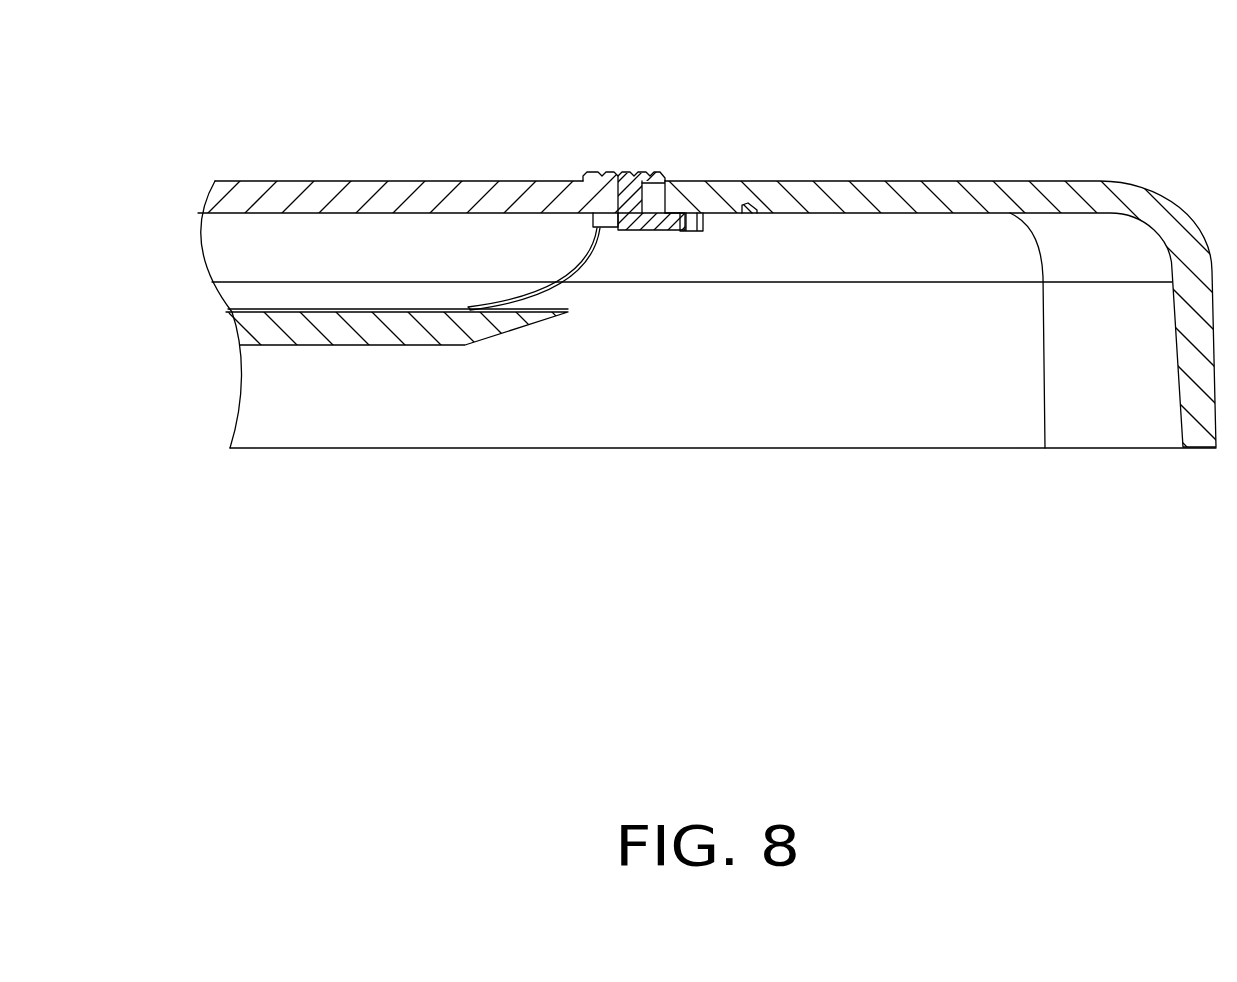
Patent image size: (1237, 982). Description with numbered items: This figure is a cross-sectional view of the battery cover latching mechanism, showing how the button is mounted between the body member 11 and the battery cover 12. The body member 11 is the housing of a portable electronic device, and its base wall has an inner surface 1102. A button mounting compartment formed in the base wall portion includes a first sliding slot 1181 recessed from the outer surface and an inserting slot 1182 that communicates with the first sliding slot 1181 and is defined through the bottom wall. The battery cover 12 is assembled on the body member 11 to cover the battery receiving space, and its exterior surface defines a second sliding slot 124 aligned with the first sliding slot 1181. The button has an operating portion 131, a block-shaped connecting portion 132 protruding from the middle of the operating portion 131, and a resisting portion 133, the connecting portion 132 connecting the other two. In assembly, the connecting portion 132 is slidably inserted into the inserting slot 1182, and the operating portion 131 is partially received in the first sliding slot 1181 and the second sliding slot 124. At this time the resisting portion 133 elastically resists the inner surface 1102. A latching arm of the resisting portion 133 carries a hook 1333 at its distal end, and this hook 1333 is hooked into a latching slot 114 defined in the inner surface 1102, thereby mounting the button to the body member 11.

The body member 11 is at (1027, 198).
The battery cover 12 is at (313, 198).
The latching slot 114 is at (780, 182).
The second sliding slot 124 is at (593, 175).
The operating portion 131 is at (623, 173).
The connecting portion 132 is at (645, 173).
The resisting portion 133 is at (667, 228).
The inner surface 1102 is at (928, 215).
The first sliding slot 1181 is at (690, 188).
The inserting slot 1182 is at (666, 200).
The hook 1333 is at (743, 228).